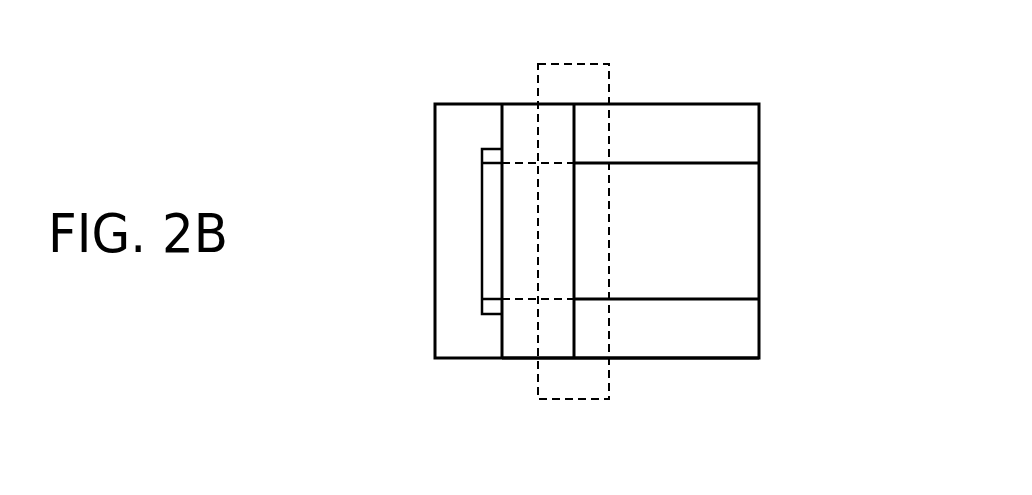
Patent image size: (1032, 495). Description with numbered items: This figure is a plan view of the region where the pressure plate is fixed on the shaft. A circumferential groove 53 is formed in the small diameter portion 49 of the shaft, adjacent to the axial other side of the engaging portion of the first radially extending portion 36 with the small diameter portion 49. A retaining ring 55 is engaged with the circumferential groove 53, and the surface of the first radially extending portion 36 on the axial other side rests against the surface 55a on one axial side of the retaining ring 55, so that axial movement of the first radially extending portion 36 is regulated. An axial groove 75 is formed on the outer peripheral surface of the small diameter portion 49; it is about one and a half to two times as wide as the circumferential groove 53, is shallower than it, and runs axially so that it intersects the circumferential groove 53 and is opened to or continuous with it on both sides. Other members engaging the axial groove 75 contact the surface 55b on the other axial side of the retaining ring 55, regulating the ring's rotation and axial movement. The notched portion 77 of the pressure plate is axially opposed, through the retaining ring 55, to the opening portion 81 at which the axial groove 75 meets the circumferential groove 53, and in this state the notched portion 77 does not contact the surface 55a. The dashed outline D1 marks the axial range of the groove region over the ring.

The first radially extending portion 36 is at (453, 195).
The retaining ring 55 is at (520, 122).
The surface axially on one side of the retaining ring 55a is at (500, 131).
The surface axially on the other side of the retaining ring 55b is at (577, 193).
The axial groove 75 is at (733, 207).
The small diameter portion 49 is at (730, 328).
The notched portion 77 is at (482, 229).
The first direction range D1 is at (590, 63).
The circumferential groove 53 is at (522, 359).
The opening portion 81 is at (581, 247).